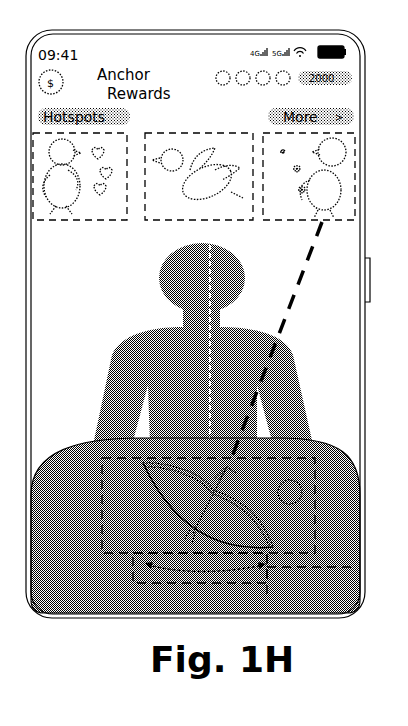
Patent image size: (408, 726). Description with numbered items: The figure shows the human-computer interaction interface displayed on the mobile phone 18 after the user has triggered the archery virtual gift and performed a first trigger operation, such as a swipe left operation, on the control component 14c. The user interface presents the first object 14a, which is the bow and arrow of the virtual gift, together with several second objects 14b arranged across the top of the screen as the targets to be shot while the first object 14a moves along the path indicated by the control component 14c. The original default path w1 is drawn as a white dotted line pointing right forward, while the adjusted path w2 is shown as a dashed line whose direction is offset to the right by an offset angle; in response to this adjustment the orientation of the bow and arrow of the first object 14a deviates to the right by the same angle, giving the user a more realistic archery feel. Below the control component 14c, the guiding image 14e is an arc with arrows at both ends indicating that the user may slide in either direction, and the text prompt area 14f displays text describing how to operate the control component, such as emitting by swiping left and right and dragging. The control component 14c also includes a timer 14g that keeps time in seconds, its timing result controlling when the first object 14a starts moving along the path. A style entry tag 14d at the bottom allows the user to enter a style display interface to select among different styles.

The electronic device 18 is at (201, 52).
The first object 14a is at (101, 500).
The second object 14b is at (80, 232).
The control component 14c is at (316, 458).
The entry tag 14d is at (104, 581).
The guiding image 14e is at (198, 582).
The text prompt area 14f is at (322, 565).
The timer 14g is at (304, 492).
The path w1 is at (210, 350).
The path w2 is at (280, 340).